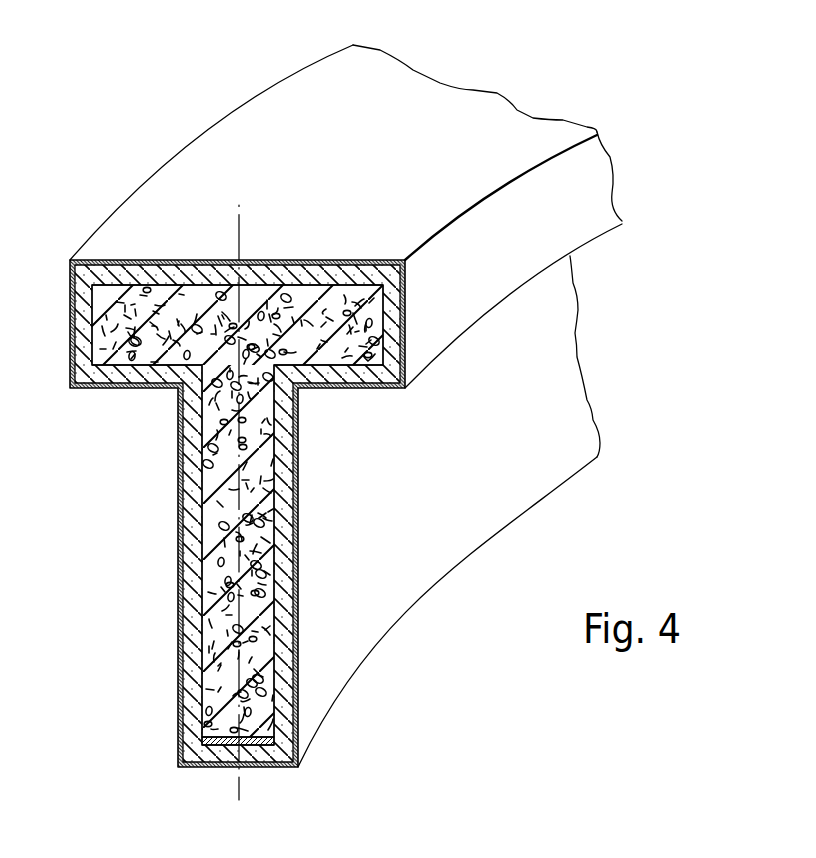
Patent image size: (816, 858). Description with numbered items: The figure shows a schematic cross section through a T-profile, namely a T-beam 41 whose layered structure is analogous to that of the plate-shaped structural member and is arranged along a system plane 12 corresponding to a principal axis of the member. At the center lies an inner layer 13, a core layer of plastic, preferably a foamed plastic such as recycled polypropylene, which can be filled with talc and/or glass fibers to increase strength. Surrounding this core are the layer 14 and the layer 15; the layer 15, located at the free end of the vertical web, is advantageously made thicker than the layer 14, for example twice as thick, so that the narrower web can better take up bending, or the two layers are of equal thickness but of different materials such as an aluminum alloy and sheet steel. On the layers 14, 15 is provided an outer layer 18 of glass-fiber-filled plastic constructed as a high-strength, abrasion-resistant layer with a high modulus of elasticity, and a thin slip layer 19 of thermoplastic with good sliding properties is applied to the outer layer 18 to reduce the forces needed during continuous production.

The T-beam 41 is at (662, 183).
The system plane 12 is at (243, 228).
The inner layer 13 is at (207, 507).
The layer 14 is at (352, 263).
The layer 15 is at (273, 770).
The outer layer 18 is at (190, 455).
The slip layer 19 is at (180, 566).